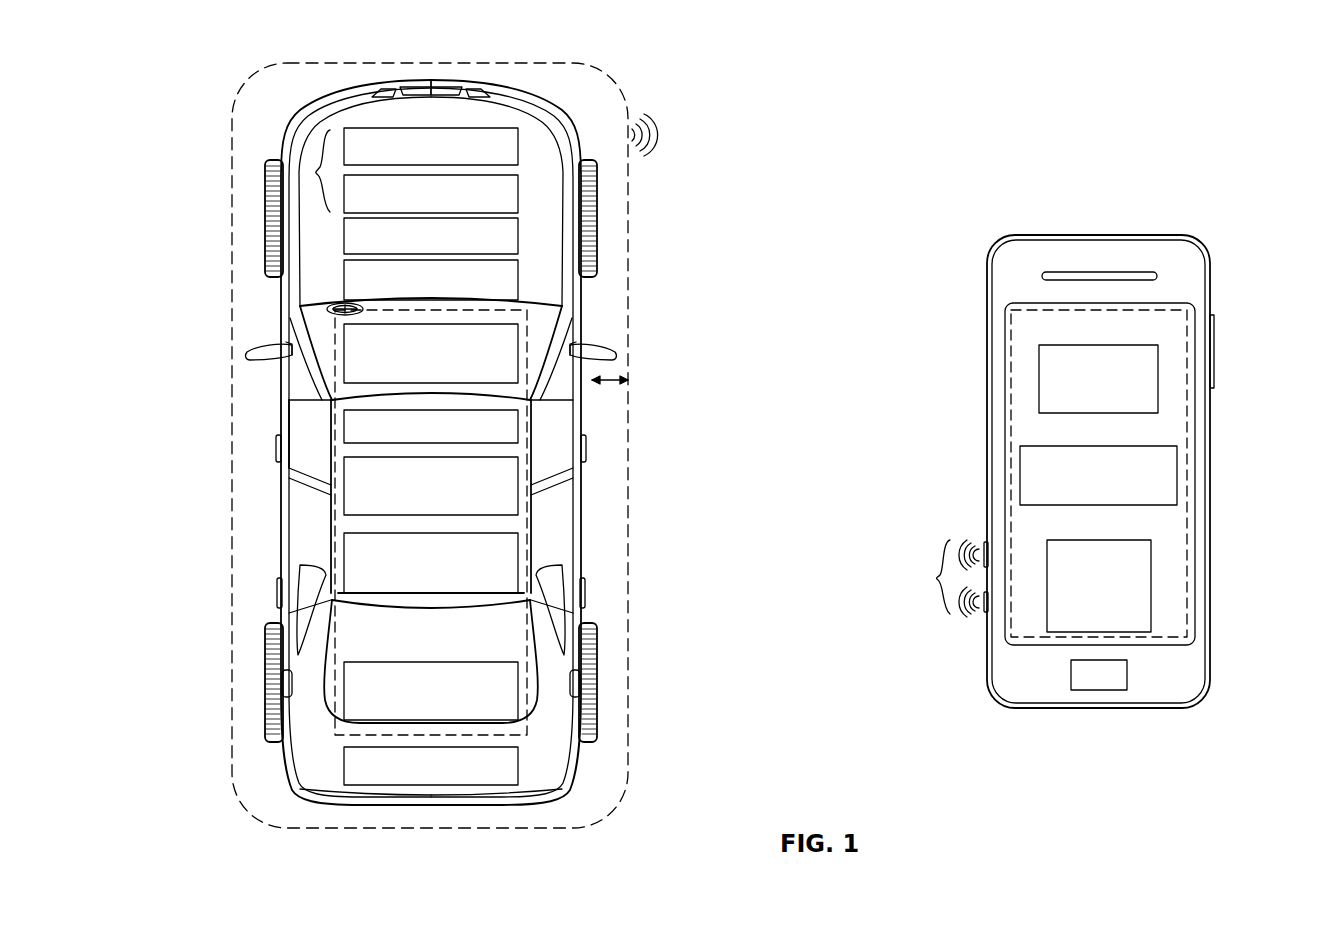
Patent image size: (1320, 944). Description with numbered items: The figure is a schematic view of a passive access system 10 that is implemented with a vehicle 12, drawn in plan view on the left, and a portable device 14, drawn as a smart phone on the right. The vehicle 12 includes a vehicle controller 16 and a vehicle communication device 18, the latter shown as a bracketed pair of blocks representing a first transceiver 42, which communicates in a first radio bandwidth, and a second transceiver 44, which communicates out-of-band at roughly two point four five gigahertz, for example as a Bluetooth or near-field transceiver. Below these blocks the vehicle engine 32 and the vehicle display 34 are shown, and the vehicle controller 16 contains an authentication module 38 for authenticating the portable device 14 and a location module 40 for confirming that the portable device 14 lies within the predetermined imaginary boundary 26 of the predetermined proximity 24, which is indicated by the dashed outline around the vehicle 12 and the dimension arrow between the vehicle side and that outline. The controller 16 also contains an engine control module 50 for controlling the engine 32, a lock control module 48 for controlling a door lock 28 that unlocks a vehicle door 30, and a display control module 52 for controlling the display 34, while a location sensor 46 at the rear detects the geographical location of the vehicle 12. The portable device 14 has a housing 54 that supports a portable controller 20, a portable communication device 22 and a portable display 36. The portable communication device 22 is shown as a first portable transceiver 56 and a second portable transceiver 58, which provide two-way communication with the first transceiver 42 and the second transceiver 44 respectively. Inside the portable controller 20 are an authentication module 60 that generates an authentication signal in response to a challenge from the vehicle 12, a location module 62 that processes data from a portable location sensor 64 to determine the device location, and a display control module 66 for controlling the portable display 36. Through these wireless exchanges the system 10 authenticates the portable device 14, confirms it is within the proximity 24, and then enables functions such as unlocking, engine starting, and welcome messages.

The passive access system 10 is at (1251, 101).
The vehicle 12 is at (563, 98).
The portable device 14 is at (1006, 225).
The vehicle controller 16 is at (532, 312).
The vehicle communication device 18 is at (311, 171).
The portable controller 20 is at (1010, 400).
The portable communication device 22 is at (928, 577).
The predetermined proximity 24 is at (612, 378).
The predetermined imaginary boundary 26 is at (632, 350).
The door lock 28 is at (274, 445).
The vehicle door 30 is at (282, 410).
The vehicle engine 32 is at (518, 238).
The display 34 is at (518, 283).
The display 36 is at (1153, 302).
The authentication module 38 is at (518, 336).
The location module 40 is at (518, 425).
The first transceiver 42 is at (518, 147).
The second transceiver 44 is at (518, 192).
The location sensor 46 is at (518, 768).
The lock control module 48 is at (518, 556).
The engine control module 50 is at (518, 506).
The display control module 52 is at (476, 664).
The housing 54 is at (995, 700).
The first portable transceiver 56 is at (985, 540).
The second portable transceiver 58 is at (985, 615).
The authentication module 60 is at (1062, 446).
The location module 62 is at (1080, 345).
The portable location sensor 64 is at (1071, 675).
The display control module 66 is at (1088, 540).